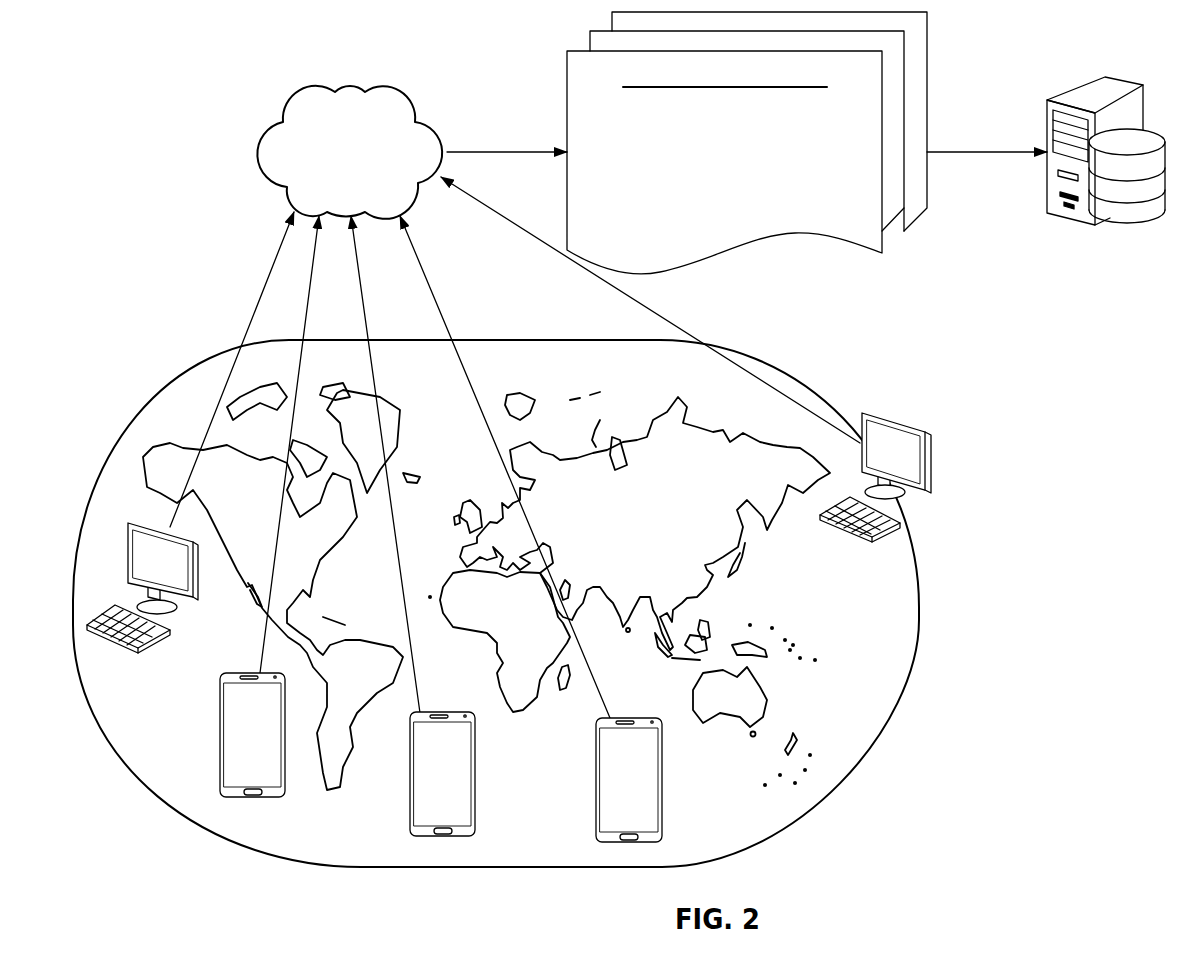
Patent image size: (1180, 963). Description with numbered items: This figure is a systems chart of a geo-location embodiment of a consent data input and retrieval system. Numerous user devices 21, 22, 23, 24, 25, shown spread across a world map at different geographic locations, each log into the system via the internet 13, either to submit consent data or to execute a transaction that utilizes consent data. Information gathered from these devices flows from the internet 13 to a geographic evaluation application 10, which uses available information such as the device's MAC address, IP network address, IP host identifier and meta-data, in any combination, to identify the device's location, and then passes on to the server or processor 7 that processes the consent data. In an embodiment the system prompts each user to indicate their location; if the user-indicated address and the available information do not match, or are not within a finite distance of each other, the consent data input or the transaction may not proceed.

The server or processor 7 is at (1046, 134).
The geographic evaluation application 10 is at (582, 48).
The internet 13 is at (350, 87).
The user device 21 is at (897, 422).
The user device 22 is at (615, 717).
The user device 23 is at (433, 712).
The user device 24 is at (237, 672).
The user device 25 is at (152, 527).